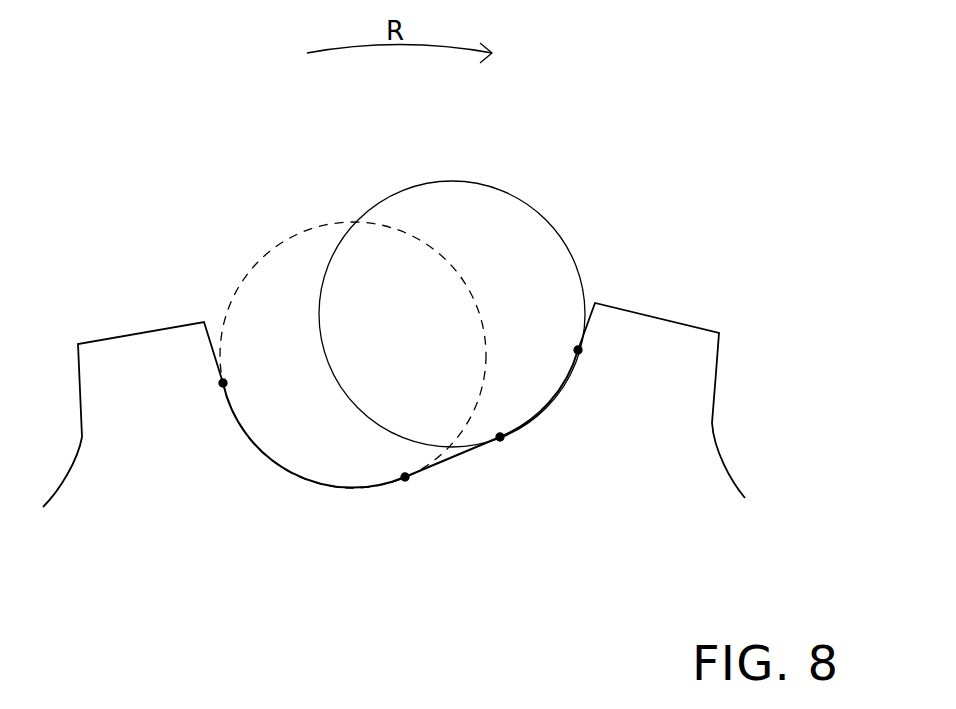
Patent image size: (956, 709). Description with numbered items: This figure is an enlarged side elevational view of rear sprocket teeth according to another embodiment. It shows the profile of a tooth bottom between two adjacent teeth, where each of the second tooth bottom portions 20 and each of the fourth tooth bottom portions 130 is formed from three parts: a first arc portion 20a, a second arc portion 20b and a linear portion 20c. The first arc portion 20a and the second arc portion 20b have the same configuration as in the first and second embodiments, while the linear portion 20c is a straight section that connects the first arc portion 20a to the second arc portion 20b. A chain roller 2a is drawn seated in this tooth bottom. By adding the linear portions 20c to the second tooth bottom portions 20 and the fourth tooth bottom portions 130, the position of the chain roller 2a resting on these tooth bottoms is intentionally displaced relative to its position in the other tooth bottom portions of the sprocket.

The chain roller 2a is at (256, 262).
The second tooth bottom portion 20 is at (421, 304).
The fourth tooth bottom portion 130 is at (343, 473).
The first arc portion 20a is at (305, 473).
The second arc portion 20b is at (523, 417).
The linear portion 20c is at (453, 447).